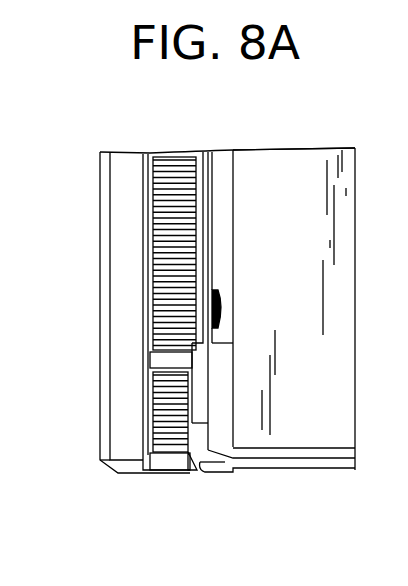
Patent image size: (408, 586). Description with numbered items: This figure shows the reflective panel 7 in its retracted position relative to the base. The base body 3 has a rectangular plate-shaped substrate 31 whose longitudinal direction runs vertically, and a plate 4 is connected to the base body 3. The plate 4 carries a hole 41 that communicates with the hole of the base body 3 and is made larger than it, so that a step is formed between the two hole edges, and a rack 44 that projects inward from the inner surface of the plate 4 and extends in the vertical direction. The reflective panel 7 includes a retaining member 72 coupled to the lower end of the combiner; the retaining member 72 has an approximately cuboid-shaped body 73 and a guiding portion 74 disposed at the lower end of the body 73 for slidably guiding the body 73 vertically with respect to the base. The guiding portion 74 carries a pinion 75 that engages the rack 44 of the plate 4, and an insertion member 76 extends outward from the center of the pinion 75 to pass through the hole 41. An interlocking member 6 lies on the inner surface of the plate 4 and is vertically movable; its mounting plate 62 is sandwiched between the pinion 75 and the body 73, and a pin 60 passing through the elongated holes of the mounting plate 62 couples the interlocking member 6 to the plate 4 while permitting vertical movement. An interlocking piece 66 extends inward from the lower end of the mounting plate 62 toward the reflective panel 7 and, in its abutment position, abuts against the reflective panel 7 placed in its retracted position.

The reflective panel 7 is at (320, 147).
The retaining member 72 is at (355, 150).
The body 73 is at (343, 213).
The interlocking member 6 is at (215, 170).
The mounting plate 62 is at (207, 210).
The pin 60 is at (218, 305).
The rack 44 is at (165, 197).
The base body 3 is at (100, 235).
The substrate 31 is at (105, 280).
The plate 4 is at (130, 338).
The insertion member 76 is at (148, 377).
The hole 41 is at (150, 405).
The pinion 75 is at (167, 440).
The guiding portion 74 is at (190, 453).
The interlocking piece 66 is at (218, 470).